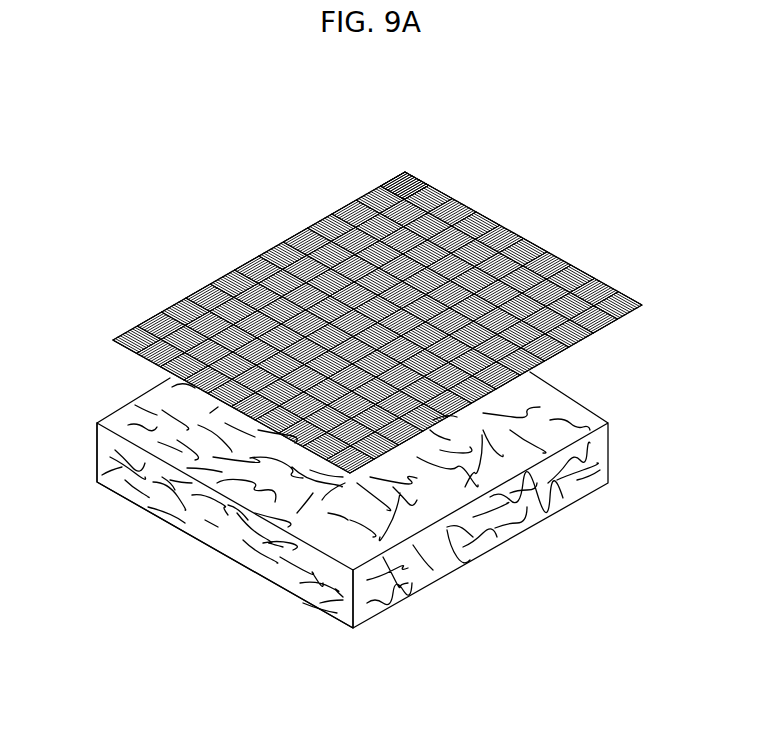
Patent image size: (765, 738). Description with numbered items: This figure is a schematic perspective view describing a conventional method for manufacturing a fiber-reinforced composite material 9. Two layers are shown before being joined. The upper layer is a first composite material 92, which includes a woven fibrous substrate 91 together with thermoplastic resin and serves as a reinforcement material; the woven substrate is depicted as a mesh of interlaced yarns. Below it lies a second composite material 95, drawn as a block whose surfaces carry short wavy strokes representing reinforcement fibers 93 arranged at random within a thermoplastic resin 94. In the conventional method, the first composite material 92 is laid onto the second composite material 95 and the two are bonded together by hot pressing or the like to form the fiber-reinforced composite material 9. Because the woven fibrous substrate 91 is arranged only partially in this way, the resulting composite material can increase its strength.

The fiber-reinforced composite material 9 is at (160, 104).
The woven fibrous substrate 91 is at (402, 186).
The first composite material 92 is at (580, 232).
The reinforcement fibers 93 is at (135, 485).
The thermoplastic resin 94 is at (97, 483).
The second composite material 95 is at (624, 391).